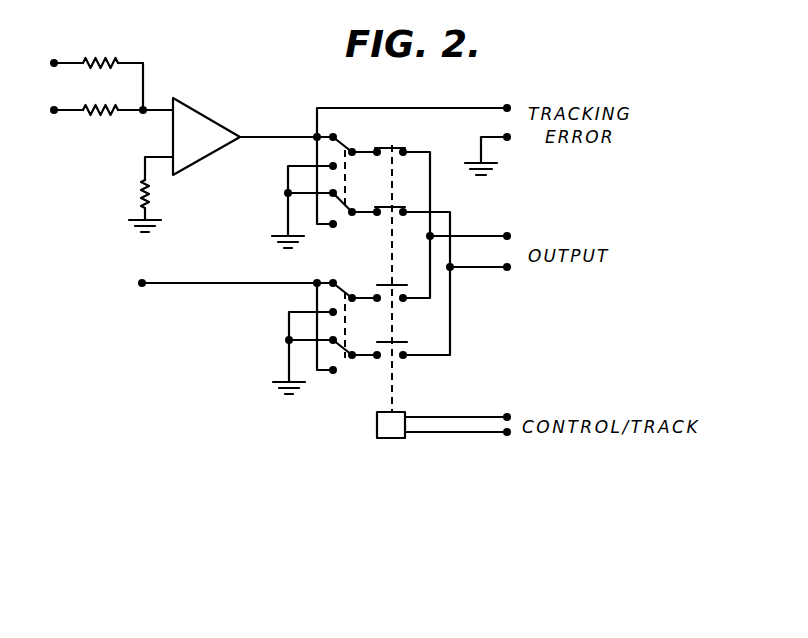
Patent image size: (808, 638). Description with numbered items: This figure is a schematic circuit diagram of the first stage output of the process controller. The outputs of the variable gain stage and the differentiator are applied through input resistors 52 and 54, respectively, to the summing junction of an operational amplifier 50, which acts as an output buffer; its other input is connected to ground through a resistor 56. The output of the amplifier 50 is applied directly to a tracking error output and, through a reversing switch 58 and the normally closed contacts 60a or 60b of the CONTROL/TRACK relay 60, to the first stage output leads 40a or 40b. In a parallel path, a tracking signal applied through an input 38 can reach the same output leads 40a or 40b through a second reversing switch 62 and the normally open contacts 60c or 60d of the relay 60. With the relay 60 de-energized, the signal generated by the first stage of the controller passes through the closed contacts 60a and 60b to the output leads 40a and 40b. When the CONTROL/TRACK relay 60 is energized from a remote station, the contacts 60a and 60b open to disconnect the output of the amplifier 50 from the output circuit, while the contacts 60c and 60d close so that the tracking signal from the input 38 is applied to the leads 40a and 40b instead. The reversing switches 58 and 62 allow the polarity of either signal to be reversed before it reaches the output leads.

The input resistor 52 is at (102, 59).
The input resistor 54 is at (99, 116).
The operational amplifier 50 is at (205, 111).
The resistor 56 is at (138, 189).
The reversing switch 58 is at (382, 191).
The normally closed contact 60a is at (398, 147).
The normally closed contact 60b is at (397, 206).
The normally open contact 60c is at (378, 284).
The normally open contact 60d is at (398, 341).
The reversing switch 62 is at (380, 332).
The first stage output lead 40a is at (489, 236).
The first stage output lead 40b is at (490, 268).
The input 38 is at (158, 283).
The CONTROL/TRACK relay 60 is at (377, 428).